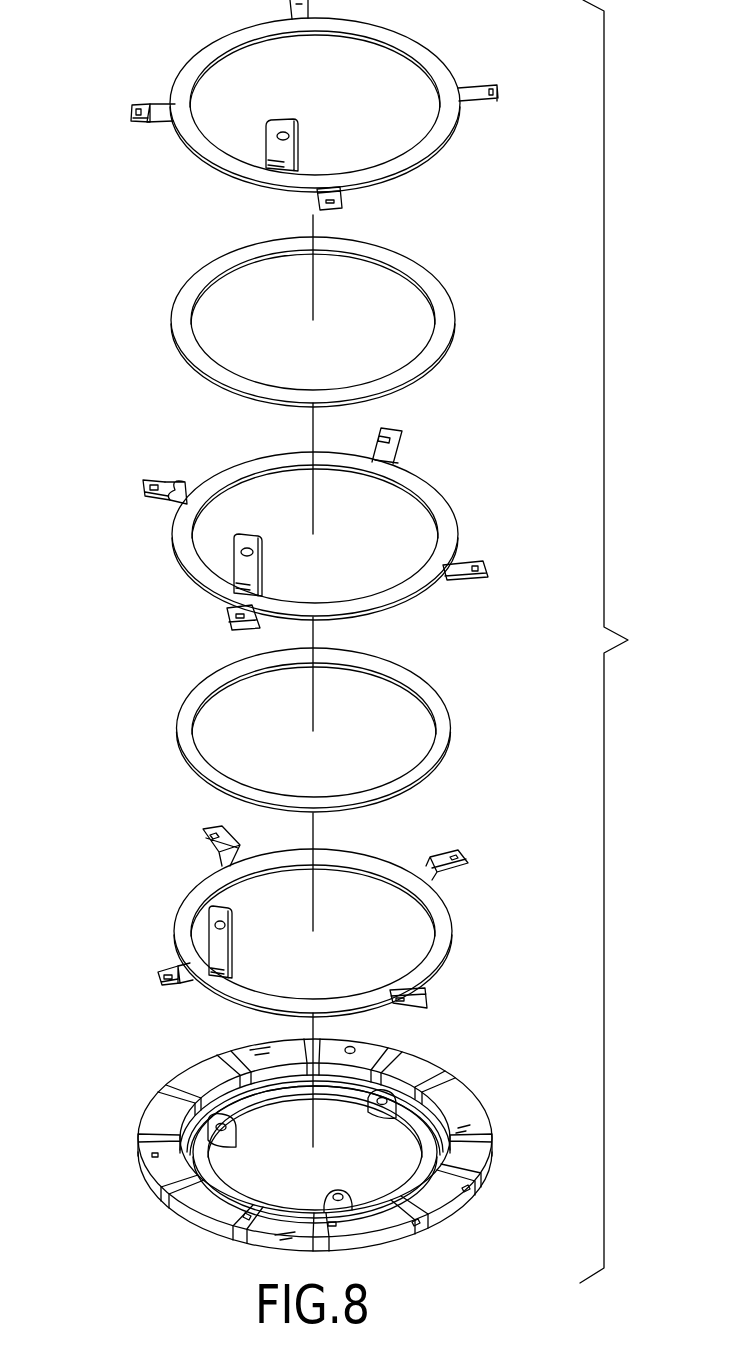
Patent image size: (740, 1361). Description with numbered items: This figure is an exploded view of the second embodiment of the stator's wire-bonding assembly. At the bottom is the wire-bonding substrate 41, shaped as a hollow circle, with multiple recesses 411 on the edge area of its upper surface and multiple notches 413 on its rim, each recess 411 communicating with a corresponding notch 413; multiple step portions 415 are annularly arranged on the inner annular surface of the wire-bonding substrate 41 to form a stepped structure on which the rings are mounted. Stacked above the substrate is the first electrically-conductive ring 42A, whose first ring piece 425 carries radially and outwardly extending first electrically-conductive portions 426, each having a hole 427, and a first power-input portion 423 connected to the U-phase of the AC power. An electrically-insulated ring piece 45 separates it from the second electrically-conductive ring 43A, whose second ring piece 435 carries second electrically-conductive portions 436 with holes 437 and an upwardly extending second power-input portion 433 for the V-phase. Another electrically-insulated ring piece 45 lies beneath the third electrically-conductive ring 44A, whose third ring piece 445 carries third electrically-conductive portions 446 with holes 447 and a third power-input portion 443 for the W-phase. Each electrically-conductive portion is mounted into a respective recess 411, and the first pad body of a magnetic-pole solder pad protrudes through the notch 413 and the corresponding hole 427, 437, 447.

The wire-bonding substrate 41 is at (427, 1203).
The recess 411 is at (470, 1137).
The notch 413 is at (468, 1190).
The step portion 415 is at (420, 1092).
The first electrically-conductive ring 42A is at (166, 910).
The first power-input portion 423 is at (220, 943).
The first ring piece 425 is at (212, 880).
The first electrically-conductive portion 426 is at (183, 972).
The hole 427 is at (172, 965).
The second electrically-conductive ring 43A is at (168, 564).
The second power-input portion 433 is at (253, 573).
The second ring piece 435 is at (258, 463).
The second electrically-conductive portion 436 is at (168, 482).
The hole 437 is at (148, 479).
The third electrically-conductive ring 44A is at (172, 38).
The third power-input portion 443 is at (280, 153).
The third ring piece 445 is at (232, 163).
The third electrically-conductive portion 446 is at (157, 112).
The hole 447 is at (140, 107).
The electrically-insulated ring piece 45 is at (433, 285).